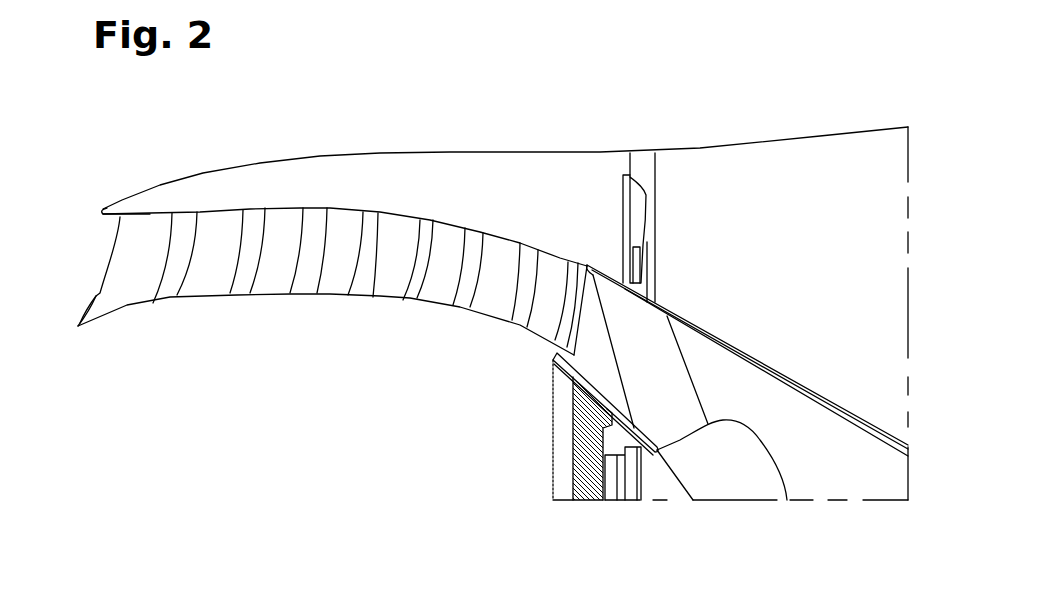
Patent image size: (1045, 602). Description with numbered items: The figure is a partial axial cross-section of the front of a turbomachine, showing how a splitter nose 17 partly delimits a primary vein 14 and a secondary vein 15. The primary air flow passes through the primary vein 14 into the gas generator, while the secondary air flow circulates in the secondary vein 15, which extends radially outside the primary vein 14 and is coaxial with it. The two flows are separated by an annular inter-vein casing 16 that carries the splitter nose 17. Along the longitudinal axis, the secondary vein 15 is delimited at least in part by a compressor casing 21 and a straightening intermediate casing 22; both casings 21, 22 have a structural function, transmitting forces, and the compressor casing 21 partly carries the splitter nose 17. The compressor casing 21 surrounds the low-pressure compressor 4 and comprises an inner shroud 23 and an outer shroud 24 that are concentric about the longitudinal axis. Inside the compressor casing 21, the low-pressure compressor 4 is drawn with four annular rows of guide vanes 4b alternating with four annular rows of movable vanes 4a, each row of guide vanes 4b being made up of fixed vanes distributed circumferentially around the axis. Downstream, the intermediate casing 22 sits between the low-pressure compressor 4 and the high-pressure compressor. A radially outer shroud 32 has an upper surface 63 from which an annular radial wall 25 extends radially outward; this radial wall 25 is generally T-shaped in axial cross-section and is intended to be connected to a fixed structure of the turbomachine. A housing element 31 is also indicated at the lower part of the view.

The low-pressure compressor 4 is at (373, 295).
The annular rows of movable vanes 4a is at (208, 270).
The annular rows of guide vanes 4b is at (127, 303).
The primary vein 14 is at (167, 292).
The secondary vein 15 is at (332, 214).
The inter-vein casing 16 is at (486, 188).
The splitter nose 17 is at (207, 197).
The compressor casing 21 is at (267, 190).
The intermediate casing 22 is at (735, 320).
The inner shroud 23 is at (297, 295).
The outer shroud 24 is at (315, 214).
The annular radial wall 25 is at (672, 188).
The housing 31 is at (653, 452).
The radially outer shroud 32 is at (672, 318).
The upper surface 63 is at (757, 348).